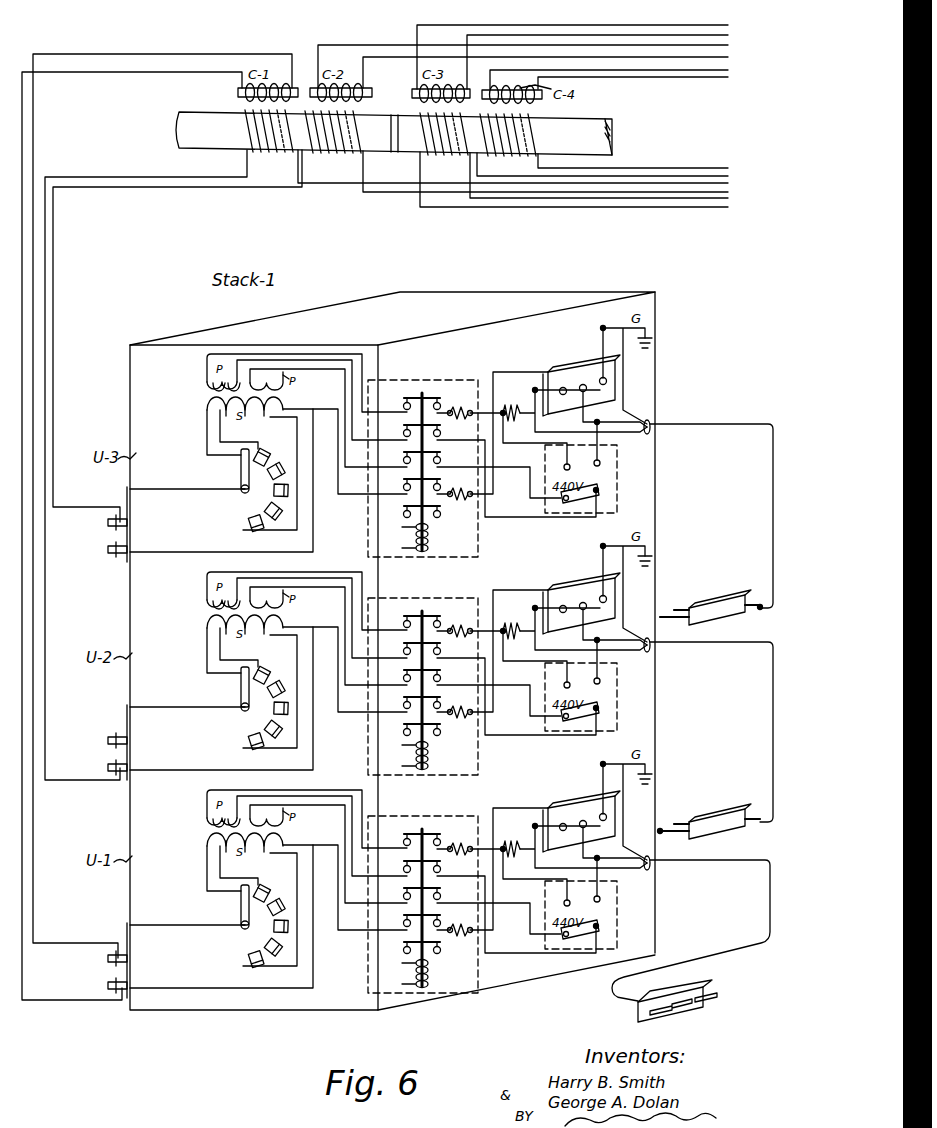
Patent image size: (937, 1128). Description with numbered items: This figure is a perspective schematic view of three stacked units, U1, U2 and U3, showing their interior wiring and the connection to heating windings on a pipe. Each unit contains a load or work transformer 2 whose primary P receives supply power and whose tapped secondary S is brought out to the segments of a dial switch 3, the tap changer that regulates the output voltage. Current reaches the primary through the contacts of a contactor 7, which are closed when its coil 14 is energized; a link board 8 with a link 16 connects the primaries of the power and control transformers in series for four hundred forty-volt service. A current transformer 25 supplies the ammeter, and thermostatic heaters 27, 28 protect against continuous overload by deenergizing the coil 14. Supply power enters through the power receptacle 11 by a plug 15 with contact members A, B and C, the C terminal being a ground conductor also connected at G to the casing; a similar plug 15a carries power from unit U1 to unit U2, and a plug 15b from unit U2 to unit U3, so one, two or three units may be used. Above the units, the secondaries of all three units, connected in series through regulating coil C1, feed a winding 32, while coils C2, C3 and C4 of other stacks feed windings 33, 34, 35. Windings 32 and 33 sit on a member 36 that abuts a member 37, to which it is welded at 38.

The load or work transformer 2 is at (284, 382).
The dial switch 3 is at (240, 487).
The contactor 7 is at (433, 689).
The link board 8 is at (617, 482).
The power receptacle 11 is at (585, 362).
The coil 14 is at (432, 538).
The plug 15 is at (686, 992).
The plug 15a is at (711, 816).
The plug 15b is at (711, 601).
The link 16 is at (607, 497).
The current transformer 25 is at (510, 622).
The thermostatic heater 27 is at (460, 704).
The thermostatic heater 28 is at (460, 621).
The winding 32 is at (274, 157).
The winding 33 is at (339, 157).
The winding 34 is at (449, 157).
The winding 35 is at (516, 157).
The member 36 is at (214, 112).
The member 37 is at (608, 113).
The weld location 38 is at (396, 112).